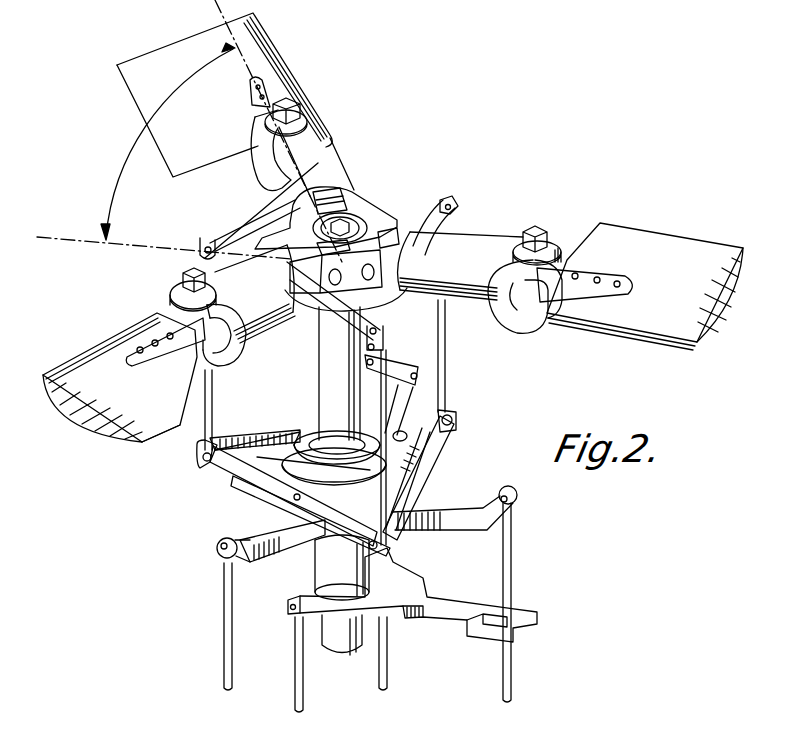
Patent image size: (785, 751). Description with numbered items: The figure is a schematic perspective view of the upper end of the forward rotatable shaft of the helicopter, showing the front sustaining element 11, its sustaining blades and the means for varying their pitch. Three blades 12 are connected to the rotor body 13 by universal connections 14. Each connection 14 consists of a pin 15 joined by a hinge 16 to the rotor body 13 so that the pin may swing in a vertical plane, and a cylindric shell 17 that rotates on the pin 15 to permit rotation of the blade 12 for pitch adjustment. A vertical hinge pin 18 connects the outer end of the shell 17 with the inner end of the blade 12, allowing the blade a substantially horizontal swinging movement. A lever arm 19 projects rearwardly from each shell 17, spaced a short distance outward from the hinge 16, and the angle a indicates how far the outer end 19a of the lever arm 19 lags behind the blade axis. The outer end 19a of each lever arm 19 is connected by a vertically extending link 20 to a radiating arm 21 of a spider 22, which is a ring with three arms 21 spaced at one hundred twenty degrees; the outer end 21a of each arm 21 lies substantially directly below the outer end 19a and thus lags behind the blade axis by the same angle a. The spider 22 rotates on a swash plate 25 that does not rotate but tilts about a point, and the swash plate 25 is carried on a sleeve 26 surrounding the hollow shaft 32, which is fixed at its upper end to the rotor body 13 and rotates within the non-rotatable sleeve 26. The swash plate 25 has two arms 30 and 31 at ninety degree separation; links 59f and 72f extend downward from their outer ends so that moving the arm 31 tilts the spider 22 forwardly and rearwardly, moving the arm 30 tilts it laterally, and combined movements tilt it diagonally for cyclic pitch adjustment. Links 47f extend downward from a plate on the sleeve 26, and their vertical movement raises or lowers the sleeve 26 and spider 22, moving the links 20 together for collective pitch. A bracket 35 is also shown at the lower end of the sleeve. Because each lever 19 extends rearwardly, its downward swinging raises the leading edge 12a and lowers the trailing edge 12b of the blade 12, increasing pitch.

The angle a is at (168, 141).
The sustaining element 11 is at (385, 179).
The blade 12 is at (270, 63).
The leading edge 12a is at (108, 338).
The trailing edge 12b is at (153, 428).
The rotor body 13 is at (275, 216).
The universal connection 14 is at (343, 151).
The pin 15 is at (338, 201).
The hinge 16 is at (346, 275).
The cylindric shell 17 is at (277, 178).
The vertical hinge pin 18 is at (292, 106).
The lever arm 19 is at (249, 221).
The outer end of lever arm 19a is at (197, 237).
The link 20 is at (212, 393).
The radiating arm of spider 21 is at (274, 431).
The outer end of spider arm 21a is at (215, 465).
The spider 22 is at (270, 422).
The swash plate 25 is at (326, 555).
The sleeve 26 is at (324, 580).
The arm of swash plate 30 is at (268, 526).
The arm of swash plate 31 is at (452, 506).
The hollow shaft 32 is at (320, 391).
The mounting bracket 35 is at (404, 588).
The link 47f is at (295, 677).
The link 59f is at (224, 640).
The link 72f is at (511, 668).